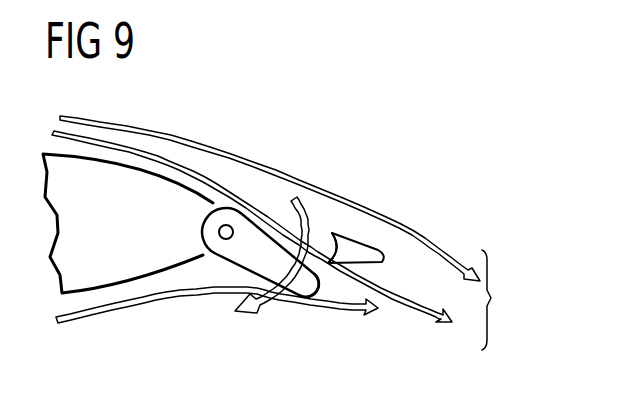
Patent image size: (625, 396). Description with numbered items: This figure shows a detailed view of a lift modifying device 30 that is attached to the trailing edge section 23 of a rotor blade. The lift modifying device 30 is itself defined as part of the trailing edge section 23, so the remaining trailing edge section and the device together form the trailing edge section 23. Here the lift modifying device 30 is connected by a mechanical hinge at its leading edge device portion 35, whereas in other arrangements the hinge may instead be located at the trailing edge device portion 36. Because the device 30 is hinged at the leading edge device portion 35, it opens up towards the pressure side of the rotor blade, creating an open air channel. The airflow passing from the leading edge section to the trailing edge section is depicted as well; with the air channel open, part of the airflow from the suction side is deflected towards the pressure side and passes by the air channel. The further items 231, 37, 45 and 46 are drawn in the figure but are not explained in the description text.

The trailing edge section 23 is at (257, 124).
The sealing strip tip 231 is at (386, 257).
The lift modifying device 30 is at (250, 243).
The leading edge device portion 35 is at (196, 226).
The trailing edge device portion 36 is at (316, 292).
The pivoting direction arrow 37 is at (296, 196).
The sealing region 45 is at (503, 300).
The recess 46 is at (319, 247).